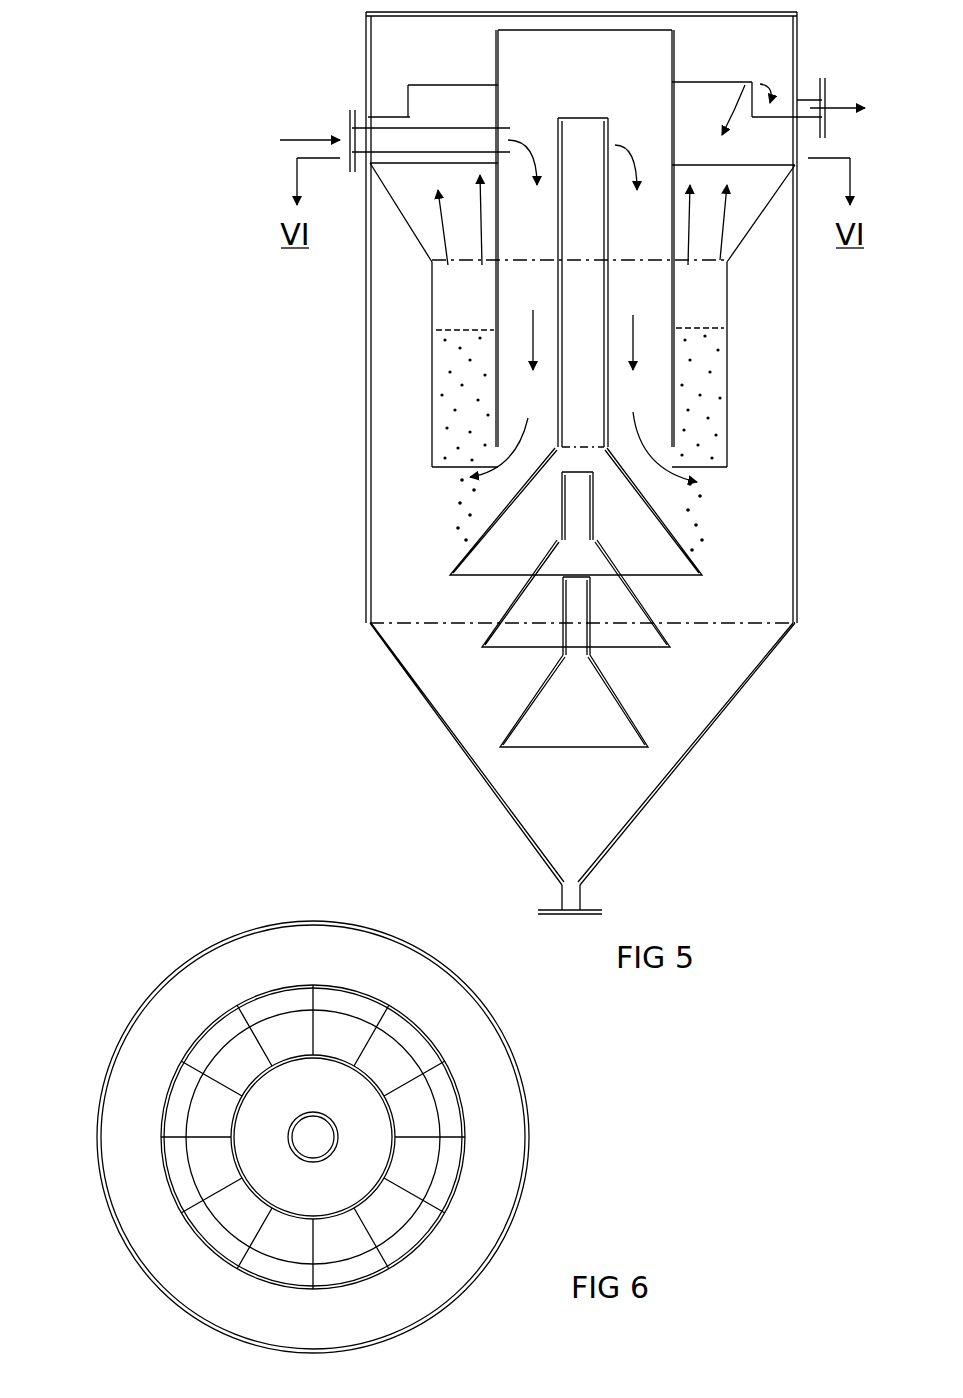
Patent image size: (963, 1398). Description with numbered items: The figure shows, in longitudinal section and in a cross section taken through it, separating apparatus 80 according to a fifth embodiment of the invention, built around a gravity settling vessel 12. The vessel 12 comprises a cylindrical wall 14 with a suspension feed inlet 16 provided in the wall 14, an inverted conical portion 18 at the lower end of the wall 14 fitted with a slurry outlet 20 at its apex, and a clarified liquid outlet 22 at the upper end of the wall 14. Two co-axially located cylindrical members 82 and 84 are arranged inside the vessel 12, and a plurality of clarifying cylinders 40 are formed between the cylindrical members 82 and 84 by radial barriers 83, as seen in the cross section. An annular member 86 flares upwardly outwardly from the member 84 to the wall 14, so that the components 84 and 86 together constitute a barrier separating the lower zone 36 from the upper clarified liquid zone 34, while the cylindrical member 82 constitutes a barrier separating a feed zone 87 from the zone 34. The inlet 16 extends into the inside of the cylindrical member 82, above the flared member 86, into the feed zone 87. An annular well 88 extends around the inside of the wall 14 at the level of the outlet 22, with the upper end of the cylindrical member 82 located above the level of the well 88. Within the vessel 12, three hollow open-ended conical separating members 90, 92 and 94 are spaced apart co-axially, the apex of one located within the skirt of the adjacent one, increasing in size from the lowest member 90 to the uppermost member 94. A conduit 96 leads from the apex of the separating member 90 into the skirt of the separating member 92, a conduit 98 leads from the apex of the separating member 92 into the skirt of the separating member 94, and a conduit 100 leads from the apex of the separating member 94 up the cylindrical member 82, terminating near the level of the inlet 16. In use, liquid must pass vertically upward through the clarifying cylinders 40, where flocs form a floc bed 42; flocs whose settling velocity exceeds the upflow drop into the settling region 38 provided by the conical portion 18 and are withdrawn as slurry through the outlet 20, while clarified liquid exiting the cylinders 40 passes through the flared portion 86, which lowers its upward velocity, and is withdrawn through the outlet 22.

In FIG. 5, the gravity settling vessel 12 is at (673, 437).
In FIG. 5, the cylindrical wall 14 is at (795, 597).
In FIG. 6, the cylindrical wall 14 is at (528, 1010).
In FIG. 5, the suspension feed inlet 16 is at (367, 165).
In FIG. 5, the inverted conical portion 18 is at (745, 683).
In FIG. 5, the slurry outlet 20 is at (582, 888).
In FIG. 5, the clarified liquid outlet 22 is at (800, 120).
In FIG. 5, the clarified liquid zone 34 is at (707, 130).
In FIG. 5, the lower zone 36 is at (740, 432).
In FIG. 5, the settling region 38 is at (738, 573).
In FIG. 5, the clarifying cylinder 40 is at (432, 355).
In FIG. 6, the clarifying cylinder 40 is at (195, 1215).
In FIG. 5, the floc bed 42 is at (450, 432).
In FIG. 5, the separating apparatus 80 is at (828, 311).
In FIG. 6, the separating apparatus 80 is at (238, 916).
In FIG. 5, the cylindrical member 82 is at (498, 210).
In FIG. 6, the cylindrical member 82 is at (398, 1117).
In FIG. 5, the radial barrier 83 is at (445, 293).
In FIG. 6, the radial barrier 83 is at (425, 1180).
In FIG. 5, the cylindrical member 84 is at (432, 415).
In FIG. 6, the cylindrical member 84 is at (450, 1112).
In FIG. 5, the annular member 86 is at (400, 218).
In FIG. 6, the annular member 86 is at (185, 1265).
In FIG. 5, the feed zone 87 is at (636, 300).
In FIG. 5, the annular well 88 is at (392, 116).
In FIG. 5, the conical separating member 90 is at (628, 717).
In FIG. 5, the conical separating member 92 is at (635, 592).
In FIG. 5, the conical separating member 94 is at (686, 525).
In FIG. 6, the conical separating member 94 is at (430, 1158).
In FIG. 5, the conduit 96 is at (593, 620).
In FIG. 5, the conduit 98 is at (595, 500).
In FIG. 5, the conduit 100 is at (607, 432).
In FIG. 6, the conduit 100 is at (337, 1150).